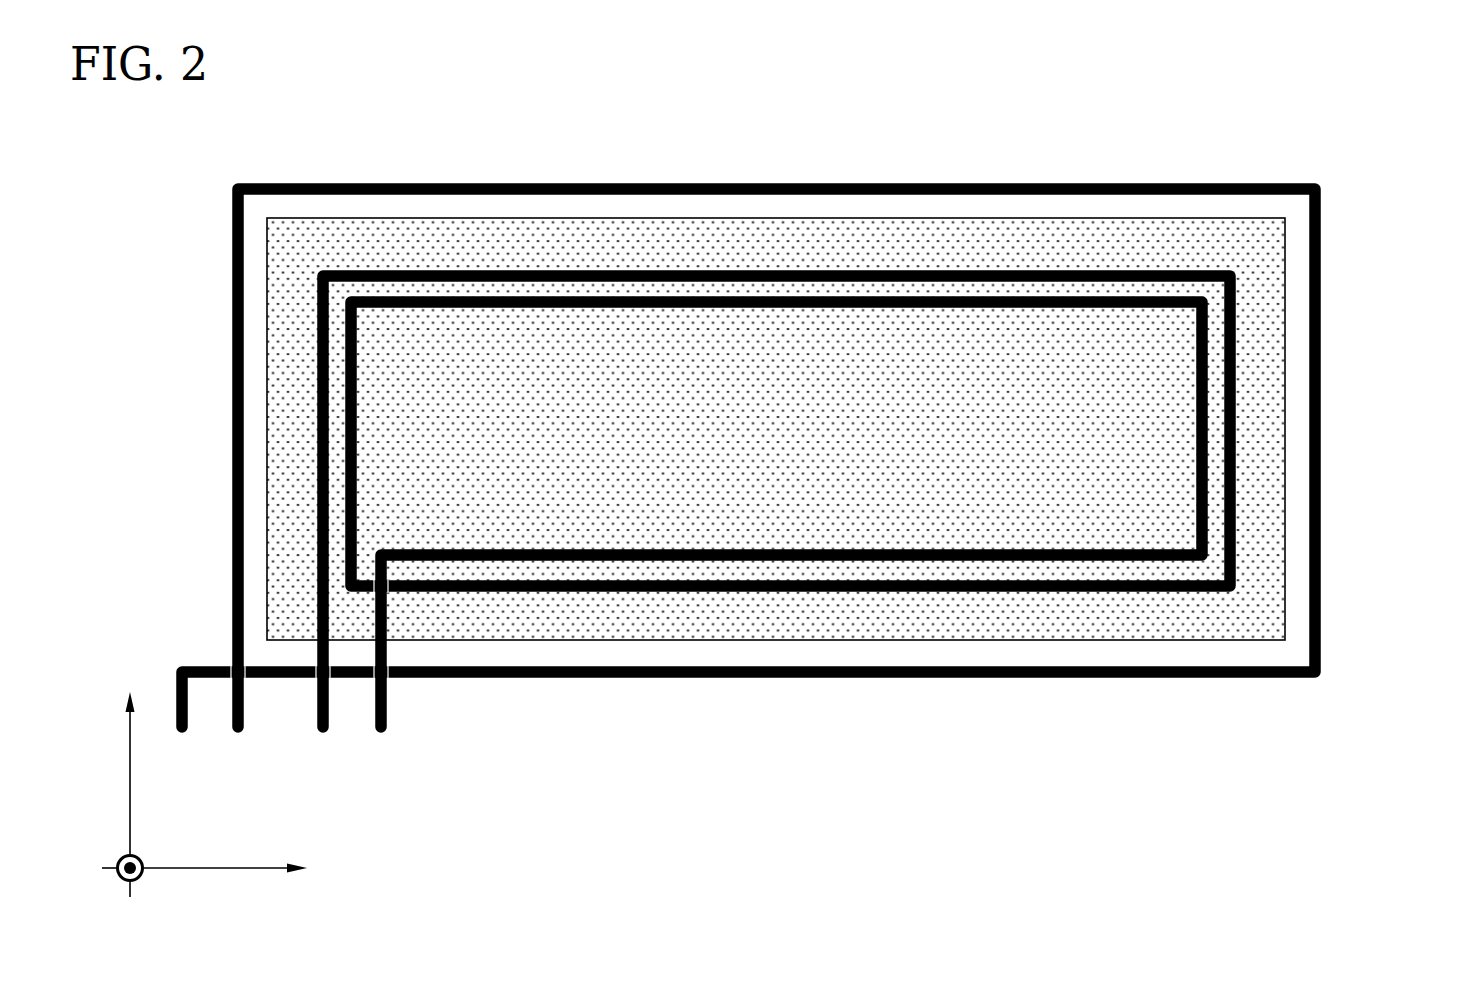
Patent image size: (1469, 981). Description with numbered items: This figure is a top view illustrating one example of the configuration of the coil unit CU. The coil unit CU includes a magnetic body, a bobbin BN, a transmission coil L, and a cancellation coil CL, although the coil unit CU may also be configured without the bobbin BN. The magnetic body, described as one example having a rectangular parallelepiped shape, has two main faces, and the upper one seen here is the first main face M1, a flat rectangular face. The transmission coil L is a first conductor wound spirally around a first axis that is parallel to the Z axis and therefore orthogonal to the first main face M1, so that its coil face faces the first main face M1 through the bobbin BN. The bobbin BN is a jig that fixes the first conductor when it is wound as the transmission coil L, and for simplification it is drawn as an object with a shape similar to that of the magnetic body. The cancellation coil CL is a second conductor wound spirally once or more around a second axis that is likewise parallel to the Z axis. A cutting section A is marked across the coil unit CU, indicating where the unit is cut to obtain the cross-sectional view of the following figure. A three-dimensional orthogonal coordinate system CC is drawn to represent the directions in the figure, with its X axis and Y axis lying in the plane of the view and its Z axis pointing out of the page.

The coil unit CU is at (645, 129).
The first main face M1 is at (1031, 243).
The transmission coil L is at (1235, 295).
The cancellation coil CL is at (1320, 353).
The bobbin BN is at (1284, 561).
The three-dimensional orthogonal coordinate system CC is at (211, 785).
The cutting section A is at (1385, 445).
The X axis X is at (234, 870).
The Y axis Y is at (129, 759).
The Z axis Z is at (104, 895).